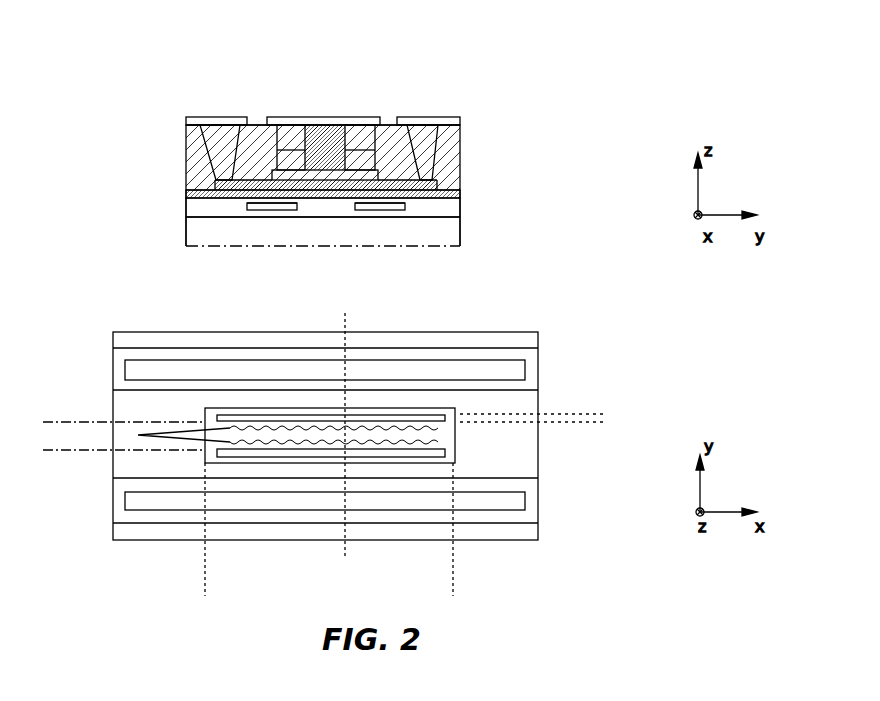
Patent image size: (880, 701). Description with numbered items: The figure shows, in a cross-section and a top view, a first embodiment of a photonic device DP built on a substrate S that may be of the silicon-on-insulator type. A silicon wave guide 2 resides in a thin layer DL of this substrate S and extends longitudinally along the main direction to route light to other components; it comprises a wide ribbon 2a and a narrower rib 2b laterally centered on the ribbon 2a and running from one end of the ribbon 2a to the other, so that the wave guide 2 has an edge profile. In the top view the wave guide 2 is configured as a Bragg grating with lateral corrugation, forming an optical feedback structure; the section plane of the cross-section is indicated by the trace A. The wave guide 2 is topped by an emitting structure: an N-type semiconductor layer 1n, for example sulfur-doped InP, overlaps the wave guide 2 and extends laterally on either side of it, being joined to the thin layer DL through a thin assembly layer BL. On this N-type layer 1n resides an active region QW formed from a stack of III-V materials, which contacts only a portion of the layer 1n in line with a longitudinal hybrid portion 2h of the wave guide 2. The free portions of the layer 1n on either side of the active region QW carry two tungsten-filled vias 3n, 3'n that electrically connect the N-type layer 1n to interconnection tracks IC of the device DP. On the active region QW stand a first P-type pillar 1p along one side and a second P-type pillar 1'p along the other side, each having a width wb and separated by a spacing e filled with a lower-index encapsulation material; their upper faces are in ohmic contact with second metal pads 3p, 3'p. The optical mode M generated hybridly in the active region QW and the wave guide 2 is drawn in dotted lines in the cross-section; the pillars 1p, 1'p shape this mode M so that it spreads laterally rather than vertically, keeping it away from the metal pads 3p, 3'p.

The photonic device DP is at (566, 141).
The interconnection tracks IC is at (218, 117).
The optical mode M is at (187, 119).
The via 3'n is at (356, 327).
The via 3n is at (417, 153).
The second P-type pillar 1'p is at (288, 326).
The second metal pad 3'p is at (297, 97).
The second metal pad 3p is at (358, 122).
The first P-type pillar 1p is at (378, 125).
The active region QW is at (340, 177).
The N-type semiconductor layer 1n is at (433, 184).
The assembly layer BL is at (186, 193).
The thin layer DL is at (462, 206).
The substrate S is at (178, 198).
The wave guide 2 is at (292, 214).
The ribbon 2a is at (405, 214).
The rib 2b is at (328, 212).
The pillar width wb is at (483, 470).
The spacing e is at (55, 392).
The hybrid portion 2h is at (453, 591).
The section line A is at (345, 313).